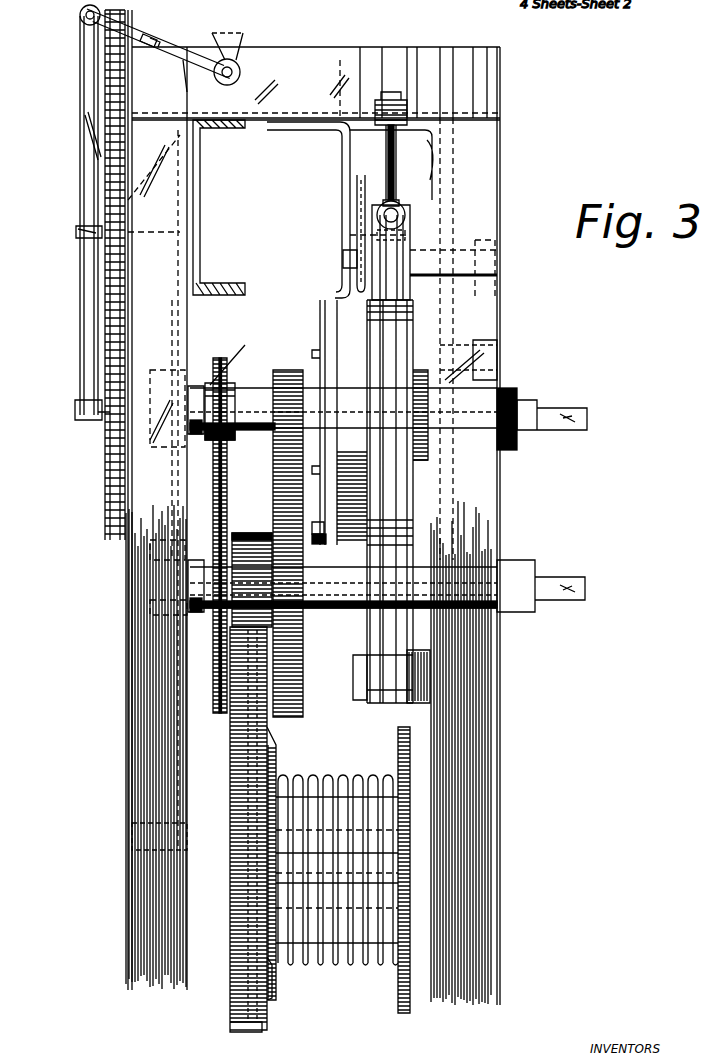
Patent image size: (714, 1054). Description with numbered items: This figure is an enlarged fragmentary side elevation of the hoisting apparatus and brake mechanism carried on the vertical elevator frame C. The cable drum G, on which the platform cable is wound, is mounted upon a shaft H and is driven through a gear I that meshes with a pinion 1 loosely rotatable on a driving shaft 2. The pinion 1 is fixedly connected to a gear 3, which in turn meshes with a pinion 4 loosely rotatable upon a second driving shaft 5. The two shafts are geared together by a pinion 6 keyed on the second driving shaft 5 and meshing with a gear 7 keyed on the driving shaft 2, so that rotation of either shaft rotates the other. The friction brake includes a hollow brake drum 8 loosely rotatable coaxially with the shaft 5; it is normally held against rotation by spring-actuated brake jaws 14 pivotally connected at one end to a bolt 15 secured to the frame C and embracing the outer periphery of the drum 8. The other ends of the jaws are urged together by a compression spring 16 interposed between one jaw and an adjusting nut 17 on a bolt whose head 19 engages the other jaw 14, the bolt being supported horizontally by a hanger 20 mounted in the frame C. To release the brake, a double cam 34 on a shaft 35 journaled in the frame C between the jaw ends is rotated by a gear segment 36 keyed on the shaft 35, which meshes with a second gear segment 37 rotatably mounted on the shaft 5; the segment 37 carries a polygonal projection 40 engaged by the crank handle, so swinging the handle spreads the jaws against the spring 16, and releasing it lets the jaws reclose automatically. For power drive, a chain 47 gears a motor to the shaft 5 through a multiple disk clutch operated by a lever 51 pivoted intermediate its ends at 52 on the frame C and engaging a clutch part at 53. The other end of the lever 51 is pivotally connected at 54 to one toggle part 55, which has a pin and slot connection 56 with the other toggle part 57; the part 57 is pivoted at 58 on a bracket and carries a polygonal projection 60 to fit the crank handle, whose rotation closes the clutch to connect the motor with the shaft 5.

The pinion 1 is at (249, 540).
The driving shaft 2 is at (505, 568).
The gear 3 is at (273, 493).
The pinion 4 is at (277, 450).
The second driving shaft 5 is at (526, 406).
The pinion 6 is at (229, 372).
The gear 7 is at (220, 720).
The brake drum 8 is at (324, 532).
The brake jaws 14 is at (377, 330).
The bolt 15 is at (353, 676).
The compression spring 16 is at (368, 224).
The adjusting nut 17 is at (365, 215).
The head 19 is at (392, 206).
The hanger 20 is at (385, 178).
The double cam 34 is at (350, 272).
The shaft 35 is at (422, 258).
The gear segment 36 is at (487, 346).
The gear segment 37 is at (487, 372).
The polygonal projection 40 is at (512, 450).
The chain 47 is at (105, 300).
The lever 51 is at (95, 186).
The pivot 52 is at (78, 232).
The clutch engagement 53 is at (85, 415).
The pivotal connection 54 is at (82, 30).
The toggle part 55 is at (140, 37).
The pin and slot connection 56 is at (162, 48).
The toggle part 57 is at (158, 58).
The pivot 58 is at (245, 50).
The polygonal projection 60 is at (243, 70).
The elevator frame C is at (130, 687).
The cable drum G is at (354, 966).
The shaft H is at (200, 852).
The gear I is at (226, 1030).